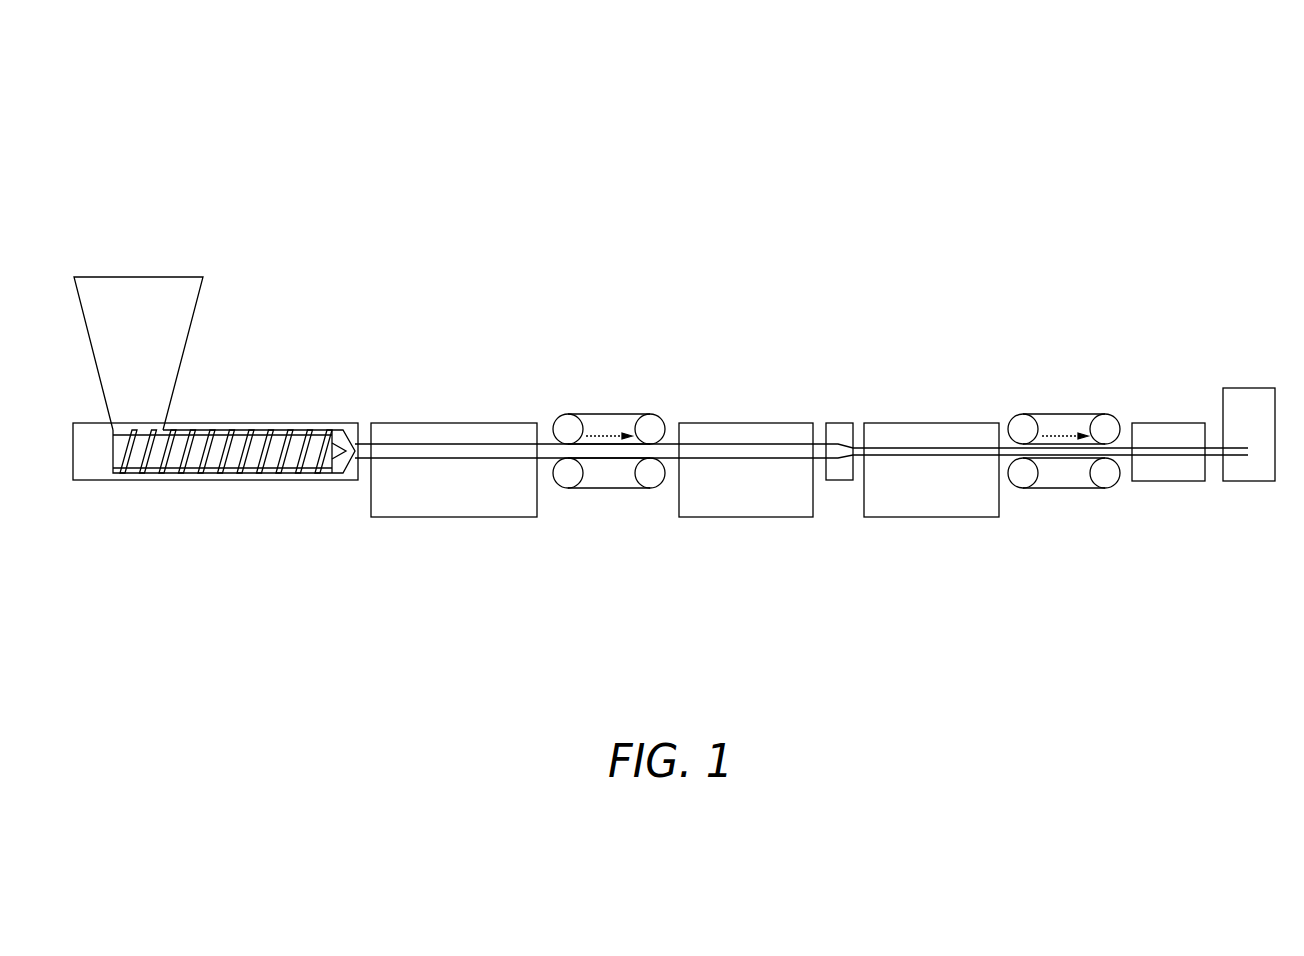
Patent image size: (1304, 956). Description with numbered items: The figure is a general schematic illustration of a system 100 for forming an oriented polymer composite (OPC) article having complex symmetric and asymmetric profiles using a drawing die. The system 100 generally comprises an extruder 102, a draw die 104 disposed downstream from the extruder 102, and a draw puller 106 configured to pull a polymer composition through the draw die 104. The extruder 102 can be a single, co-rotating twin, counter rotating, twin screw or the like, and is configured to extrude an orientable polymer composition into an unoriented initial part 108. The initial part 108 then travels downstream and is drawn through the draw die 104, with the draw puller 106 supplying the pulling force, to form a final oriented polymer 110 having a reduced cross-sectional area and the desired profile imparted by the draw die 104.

The system 100 is at (156, 96).
The extruder 102 is at (421, 412).
The draw die 104 is at (832, 493).
The draw puller 106 is at (1062, 401).
The unoriented initial part 108 is at (464, 470).
The final oriented polymer 110 is at (969, 471).